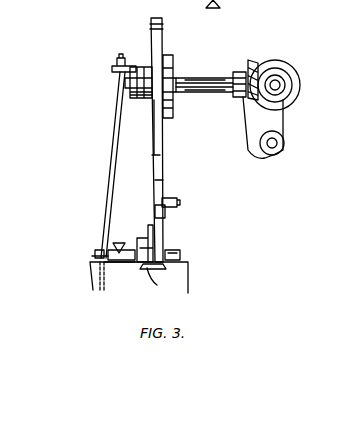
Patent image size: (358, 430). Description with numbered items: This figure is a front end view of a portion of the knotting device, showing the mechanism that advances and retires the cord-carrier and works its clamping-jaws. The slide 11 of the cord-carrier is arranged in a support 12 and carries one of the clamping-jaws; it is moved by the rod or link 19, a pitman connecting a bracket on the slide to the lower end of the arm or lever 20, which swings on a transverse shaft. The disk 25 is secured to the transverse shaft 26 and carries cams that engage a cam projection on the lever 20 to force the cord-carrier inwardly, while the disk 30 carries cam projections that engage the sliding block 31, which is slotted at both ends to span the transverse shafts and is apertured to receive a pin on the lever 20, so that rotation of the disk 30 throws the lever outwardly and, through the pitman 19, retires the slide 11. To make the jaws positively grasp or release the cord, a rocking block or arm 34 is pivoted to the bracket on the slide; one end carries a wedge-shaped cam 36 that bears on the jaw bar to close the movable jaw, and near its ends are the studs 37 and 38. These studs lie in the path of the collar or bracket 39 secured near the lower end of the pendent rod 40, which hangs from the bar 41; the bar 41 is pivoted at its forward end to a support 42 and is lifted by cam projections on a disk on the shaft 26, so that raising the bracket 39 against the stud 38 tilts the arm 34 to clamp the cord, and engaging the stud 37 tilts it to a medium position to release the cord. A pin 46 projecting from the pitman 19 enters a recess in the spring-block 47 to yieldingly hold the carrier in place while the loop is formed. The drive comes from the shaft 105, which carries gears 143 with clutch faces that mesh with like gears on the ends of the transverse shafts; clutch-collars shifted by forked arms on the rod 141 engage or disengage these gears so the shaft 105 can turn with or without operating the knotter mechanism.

The slide 11 is at (158, 266).
The support 12 is at (97, 276).
The rod or link 19 is at (166, 210).
The arm or lever 20 is at (160, 186).
The disk 25 is at (160, 43).
The transverse shaft 26 is at (208, 93).
The disk 30 is at (172, 73).
The sliding block 31 is at (170, 60).
The rocking block or arm 34 is at (147, 242).
The wedge-shaped cam 36 is at (138, 266).
The rod or stud 37 is at (123, 262).
The rod or stud 38 is at (117, 250).
The collar or bracket 39 is at (99, 255).
The pendent rod 40 is at (108, 184).
The bar 41 is at (118, 70).
The support 42 is at (144, 99).
The pin 46 is at (179, 205).
The spring-block 47 is at (181, 258).
The shaft 105 is at (276, 85).
The rod 141 is at (282, 135).
The gears 143 is at (273, 63).